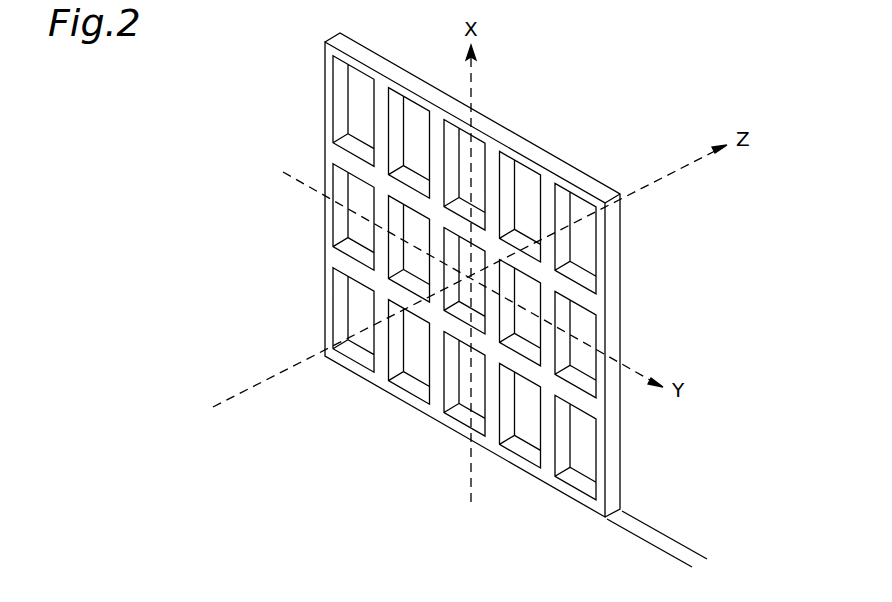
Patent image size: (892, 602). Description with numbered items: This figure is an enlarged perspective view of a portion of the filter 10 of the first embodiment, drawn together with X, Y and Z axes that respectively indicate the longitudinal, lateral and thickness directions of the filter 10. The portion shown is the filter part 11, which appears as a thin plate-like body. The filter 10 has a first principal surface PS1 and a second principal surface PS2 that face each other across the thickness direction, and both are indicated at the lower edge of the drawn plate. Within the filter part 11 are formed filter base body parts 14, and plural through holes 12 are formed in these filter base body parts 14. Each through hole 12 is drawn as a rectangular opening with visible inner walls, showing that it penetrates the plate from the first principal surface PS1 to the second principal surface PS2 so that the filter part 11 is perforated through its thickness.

The filter 10 is at (238, 103).
The filter part 11 is at (624, 275).
The through hole 12 is at (413, 370).
The filter base body part 14 is at (552, 178).
The first principal surface PS1 is at (650, 545).
The second principal surface PS2 is at (668, 530).